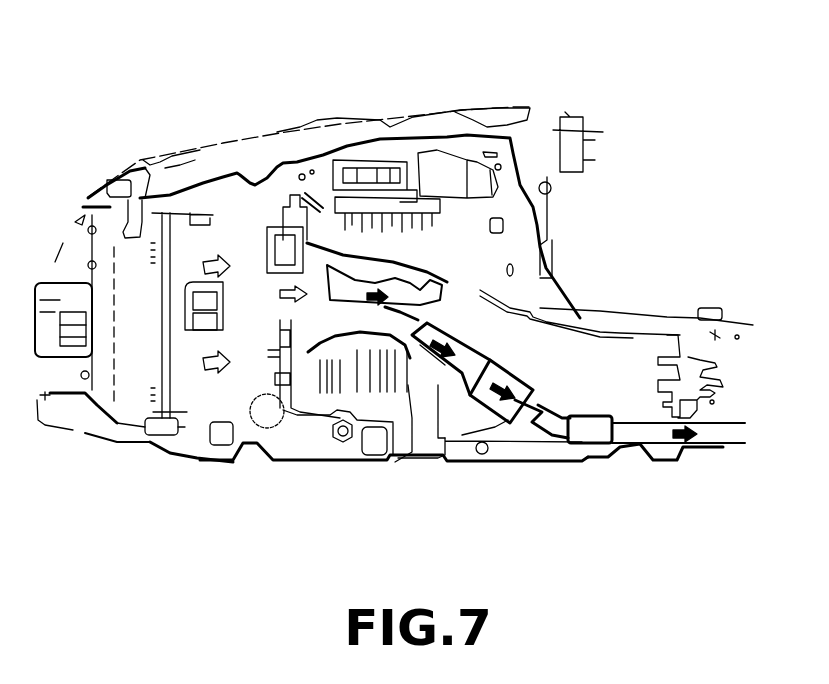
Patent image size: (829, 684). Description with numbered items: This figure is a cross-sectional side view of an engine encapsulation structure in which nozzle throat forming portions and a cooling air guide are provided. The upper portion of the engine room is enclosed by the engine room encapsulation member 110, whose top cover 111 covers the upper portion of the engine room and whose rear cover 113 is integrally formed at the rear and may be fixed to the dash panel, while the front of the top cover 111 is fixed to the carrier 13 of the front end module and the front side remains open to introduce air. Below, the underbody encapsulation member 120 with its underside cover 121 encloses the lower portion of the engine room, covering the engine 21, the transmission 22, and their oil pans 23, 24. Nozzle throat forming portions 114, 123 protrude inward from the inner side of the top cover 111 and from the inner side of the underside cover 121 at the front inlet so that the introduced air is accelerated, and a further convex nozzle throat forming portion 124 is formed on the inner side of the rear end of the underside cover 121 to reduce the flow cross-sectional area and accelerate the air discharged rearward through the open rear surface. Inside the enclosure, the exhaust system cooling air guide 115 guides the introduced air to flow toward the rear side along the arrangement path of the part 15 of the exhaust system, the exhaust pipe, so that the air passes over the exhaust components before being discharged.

The carrier 13 is at (148, 190).
The nozzle throat forming portion 114 is at (262, 190).
The engine room encapsulation member 110 is at (377, 136).
The top cover 111 is at (343, 137).
The rear cover 113 is at (547, 197).
The exhaust system cooling air guide 115 is at (480, 260).
The transmission 22 is at (583, 313).
The engine 21 is at (264, 316).
The part of the exhaust system 15 is at (413, 400).
The oil pan 23 is at (417, 462).
The oil pan 24 is at (577, 447).
The underbody encapsulation member 120 is at (484, 472).
The underside cover 121 is at (320, 462).
The nozzle throat forming portion 123 is at (250, 437).
The nozzle throat forming portion 124 is at (620, 447).